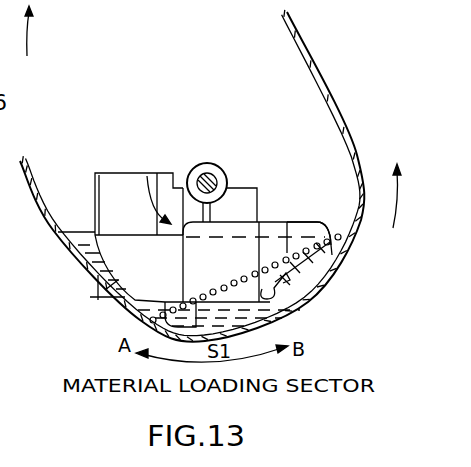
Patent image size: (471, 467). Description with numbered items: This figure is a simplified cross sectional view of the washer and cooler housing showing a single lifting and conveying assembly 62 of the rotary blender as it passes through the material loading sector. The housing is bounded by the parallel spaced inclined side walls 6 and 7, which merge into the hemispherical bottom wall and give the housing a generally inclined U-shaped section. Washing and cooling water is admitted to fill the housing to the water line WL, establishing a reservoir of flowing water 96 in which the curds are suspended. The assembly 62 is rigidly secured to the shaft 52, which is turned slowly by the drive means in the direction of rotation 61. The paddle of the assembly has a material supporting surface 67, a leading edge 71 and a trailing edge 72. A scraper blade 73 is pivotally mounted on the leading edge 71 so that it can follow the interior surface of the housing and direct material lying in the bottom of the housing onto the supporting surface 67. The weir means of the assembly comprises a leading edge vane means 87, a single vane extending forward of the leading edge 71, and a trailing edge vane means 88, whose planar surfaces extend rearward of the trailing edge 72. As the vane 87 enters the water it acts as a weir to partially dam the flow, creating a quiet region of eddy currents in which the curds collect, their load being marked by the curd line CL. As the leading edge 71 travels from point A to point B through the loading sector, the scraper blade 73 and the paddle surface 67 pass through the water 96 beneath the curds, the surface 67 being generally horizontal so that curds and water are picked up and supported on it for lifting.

The inclined side wall 6 is at (303, 43).
The inclined side wall 7 is at (47, 218).
The direction of rotation 61 is at (31, 40).
The lifting and conveying assembly 62 is at (158, 171).
The shaft 52 is at (218, 172).
The material supporting surface 67 is at (232, 301).
The leading edge 71 is at (287, 316).
The trailing edge 72 is at (175, 300).
The scraper blade 73 is at (104, 298).
The leading edge vane means 87 is at (303, 227).
The trailing edge vane means 88 is at (127, 242).
The reservoir of flowing water 96 is at (73, 258).
The water line WL is at (74, 230).
The curd line CL is at (334, 273).